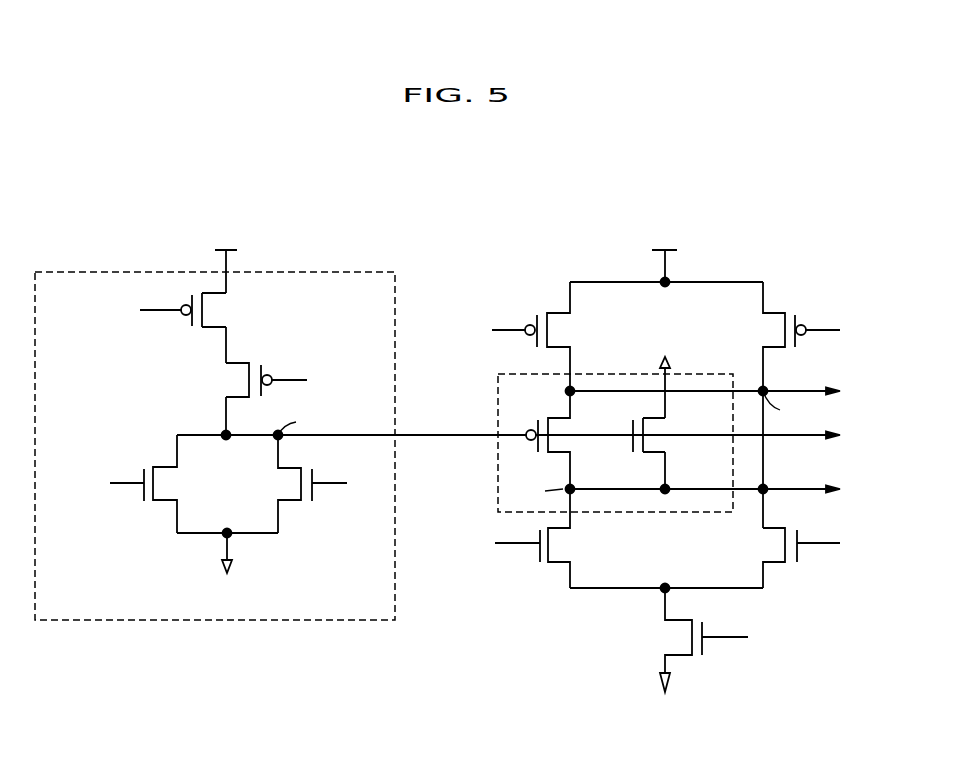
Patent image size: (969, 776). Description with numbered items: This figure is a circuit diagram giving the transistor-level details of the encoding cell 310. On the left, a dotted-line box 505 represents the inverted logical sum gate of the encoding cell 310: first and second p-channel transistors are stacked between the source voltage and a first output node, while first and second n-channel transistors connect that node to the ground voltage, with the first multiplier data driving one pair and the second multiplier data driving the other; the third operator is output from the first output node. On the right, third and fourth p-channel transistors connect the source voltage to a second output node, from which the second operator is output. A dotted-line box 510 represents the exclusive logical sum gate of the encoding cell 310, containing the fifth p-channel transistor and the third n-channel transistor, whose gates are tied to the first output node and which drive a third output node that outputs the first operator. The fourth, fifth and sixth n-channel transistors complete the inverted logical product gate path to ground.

The encoding cell 310 is at (788, 206).
The dotted-line box representing the inverted logical sum gate NOR31 505 is at (207, 620).
The dotted-line box representing the exclusive logical sum gate XOR31 510 is at (498, 408).